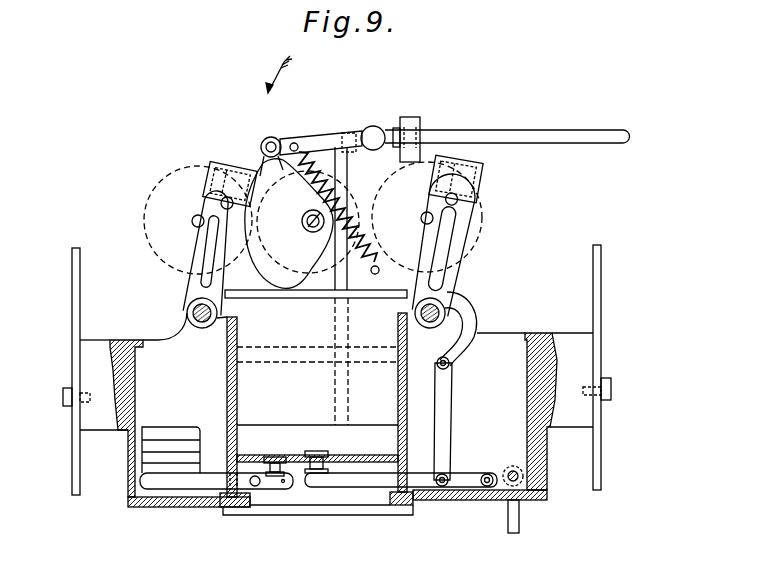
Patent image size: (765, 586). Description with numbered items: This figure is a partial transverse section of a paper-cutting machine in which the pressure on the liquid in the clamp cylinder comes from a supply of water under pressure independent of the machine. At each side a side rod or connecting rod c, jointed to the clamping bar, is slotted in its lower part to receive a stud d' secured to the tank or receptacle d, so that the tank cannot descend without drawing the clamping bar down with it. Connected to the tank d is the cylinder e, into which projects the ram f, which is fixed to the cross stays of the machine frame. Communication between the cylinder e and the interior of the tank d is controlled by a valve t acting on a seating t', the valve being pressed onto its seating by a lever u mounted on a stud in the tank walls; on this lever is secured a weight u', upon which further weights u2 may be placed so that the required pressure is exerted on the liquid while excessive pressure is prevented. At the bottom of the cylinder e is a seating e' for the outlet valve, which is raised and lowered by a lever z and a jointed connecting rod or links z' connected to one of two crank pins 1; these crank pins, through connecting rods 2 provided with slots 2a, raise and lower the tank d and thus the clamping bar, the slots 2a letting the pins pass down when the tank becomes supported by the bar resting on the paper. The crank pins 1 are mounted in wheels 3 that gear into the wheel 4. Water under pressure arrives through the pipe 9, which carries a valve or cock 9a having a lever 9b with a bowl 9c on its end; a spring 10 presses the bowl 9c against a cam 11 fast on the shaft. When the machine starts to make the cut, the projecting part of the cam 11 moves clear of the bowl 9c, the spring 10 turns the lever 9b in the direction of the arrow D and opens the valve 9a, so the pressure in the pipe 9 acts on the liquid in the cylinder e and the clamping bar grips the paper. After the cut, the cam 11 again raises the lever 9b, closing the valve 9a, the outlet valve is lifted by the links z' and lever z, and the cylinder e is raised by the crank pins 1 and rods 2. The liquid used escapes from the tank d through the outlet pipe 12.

The pipe 9 is at (507, 132).
The valve or cock 9a is at (391, 133).
The lever 9b is at (332, 133).
The bowl 9c is at (264, 146).
The cam 11 is at (250, 158).
The wheel 4 is at (348, 218).
The spring 10 is at (345, 213).
The crank-pins 1 is at (438, 191).
The connecting rods 2 is at (200, 290).
The slots 2a is at (210, 262).
The wheels 3 is at (317, 214).
The arrow D is at (271, 73).
The lever z is at (401, 475).
The jointed connecting rod z' is at (456, 382).
The outlet pipe 12 is at (524, 499).
The side-rod or connecting rod c is at (330, 370).
The tank or receptacle d is at (336, 414).
The stud d' is at (336, 392).
The cylinder e is at (316, 393).
The seating e' is at (323, 453).
The ram f is at (317, 361).
The valve t is at (317, 449).
The seating t' is at (272, 456).
The lever u is at (216, 482).
The weight u' is at (216, 472).
The weight or weights u2 is at (171, 450).